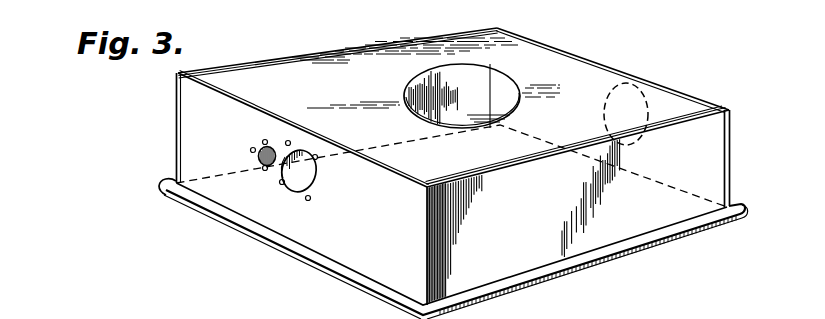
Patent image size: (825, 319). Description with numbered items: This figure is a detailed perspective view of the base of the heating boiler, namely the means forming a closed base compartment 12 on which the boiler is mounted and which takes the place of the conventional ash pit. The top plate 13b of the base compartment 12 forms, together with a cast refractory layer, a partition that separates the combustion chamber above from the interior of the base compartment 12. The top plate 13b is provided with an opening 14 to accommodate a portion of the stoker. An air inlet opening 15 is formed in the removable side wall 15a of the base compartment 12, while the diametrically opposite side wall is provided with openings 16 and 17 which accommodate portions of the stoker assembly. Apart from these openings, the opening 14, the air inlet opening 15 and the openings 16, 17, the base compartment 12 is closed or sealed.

The base compartment 12 is at (674, 89).
The top plate 13b is at (402, 52).
The opening 14 is at (406, 92).
The air inlet opening 15 is at (605, 107).
The removable side wall 15a is at (730, 162).
The opening 16 is at (318, 177).
The opening 17 is at (262, 147).